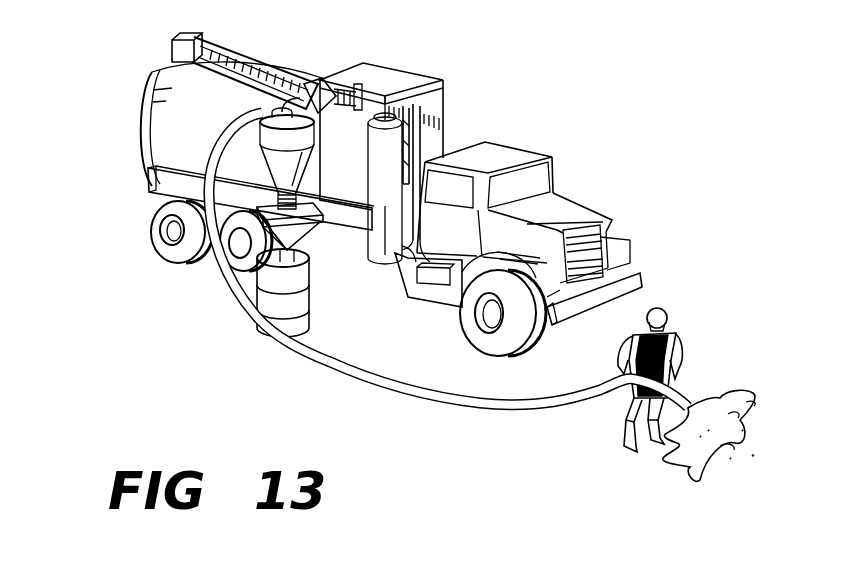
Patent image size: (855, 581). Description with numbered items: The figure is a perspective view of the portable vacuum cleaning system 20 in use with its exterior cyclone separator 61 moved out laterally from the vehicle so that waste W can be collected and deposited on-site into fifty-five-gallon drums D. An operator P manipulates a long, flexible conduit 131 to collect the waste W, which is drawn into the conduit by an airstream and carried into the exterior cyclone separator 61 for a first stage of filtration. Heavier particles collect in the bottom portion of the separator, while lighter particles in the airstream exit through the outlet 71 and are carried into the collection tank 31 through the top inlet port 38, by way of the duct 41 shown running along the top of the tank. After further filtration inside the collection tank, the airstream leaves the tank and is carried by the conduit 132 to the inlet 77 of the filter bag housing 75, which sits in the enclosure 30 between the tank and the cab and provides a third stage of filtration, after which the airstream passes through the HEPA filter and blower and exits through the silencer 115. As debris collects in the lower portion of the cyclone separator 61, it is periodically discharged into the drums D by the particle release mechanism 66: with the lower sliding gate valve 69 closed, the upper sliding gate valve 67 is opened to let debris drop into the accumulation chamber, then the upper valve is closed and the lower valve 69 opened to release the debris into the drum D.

The vacuum truck system 20 is at (472, 55).
The enclosure box 30 is at (380, 145).
The collection tank 31 is at (142, 131).
The top inlet port 38 is at (180, 32).
The duct 41 is at (234, 44).
The exterior cyclone separator 61 is at (276, 157).
The particle release mechanism 66 is at (317, 252).
The upper sliding gate valve 67 is at (314, 240).
The lower sliding gate valve 69 is at (303, 272).
The outlet 71 is at (252, 101).
The filter bag housing 75 is at (381, 83).
The inlet 77 is at (340, 106).
The silencer 115 is at (400, 270).
The flexible conduit 131 is at (392, 390).
The conduit 132 is at (321, 148).
The drums D is at (308, 318).
The operator P is at (667, 340).
The waste W is at (700, 476).